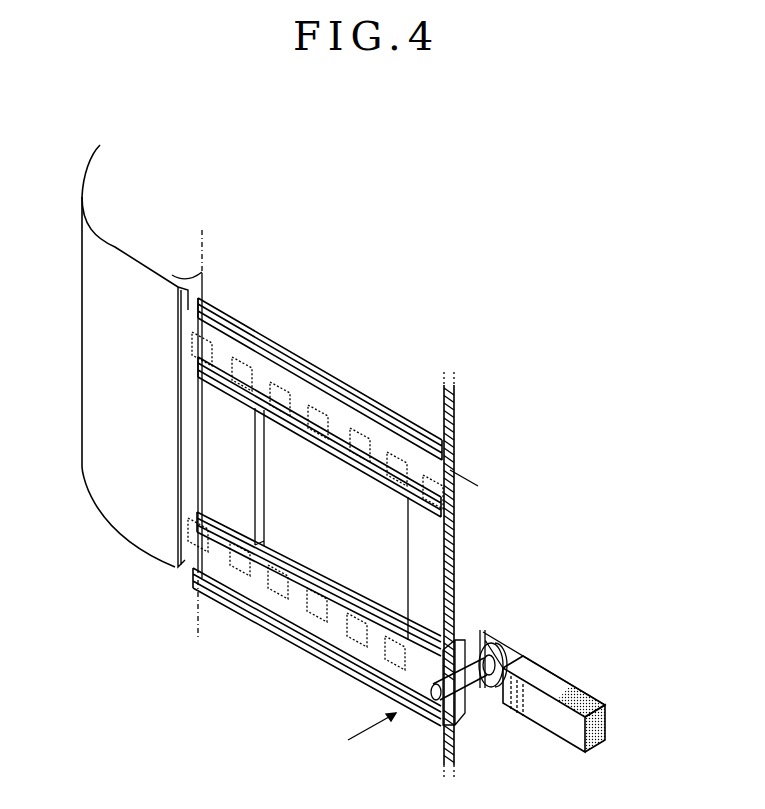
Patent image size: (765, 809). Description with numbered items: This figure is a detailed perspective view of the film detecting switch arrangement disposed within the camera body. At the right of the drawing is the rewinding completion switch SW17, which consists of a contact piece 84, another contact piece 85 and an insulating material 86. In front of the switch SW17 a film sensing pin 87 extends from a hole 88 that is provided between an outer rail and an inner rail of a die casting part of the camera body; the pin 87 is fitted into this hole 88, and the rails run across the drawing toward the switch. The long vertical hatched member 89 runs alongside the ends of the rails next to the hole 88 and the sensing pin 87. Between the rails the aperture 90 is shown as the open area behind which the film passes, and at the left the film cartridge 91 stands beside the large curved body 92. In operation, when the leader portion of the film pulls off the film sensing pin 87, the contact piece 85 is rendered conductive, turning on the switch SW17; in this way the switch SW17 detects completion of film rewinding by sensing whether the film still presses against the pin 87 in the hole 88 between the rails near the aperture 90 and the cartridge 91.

The contact piece 84 is at (552, 673).
The contact piece 85 is at (528, 680).
The insulating material 86 is at (593, 698).
The film sensing pin 87 is at (470, 675).
The hole 88 is at (460, 719).
The guide bar 89 is at (452, 553).
The aperture 90 is at (322, 556).
The film cartridge 91 is at (193, 550).
The film roll 92 is at (125, 522).
The rewinding completion switch SW17 is at (573, 681).